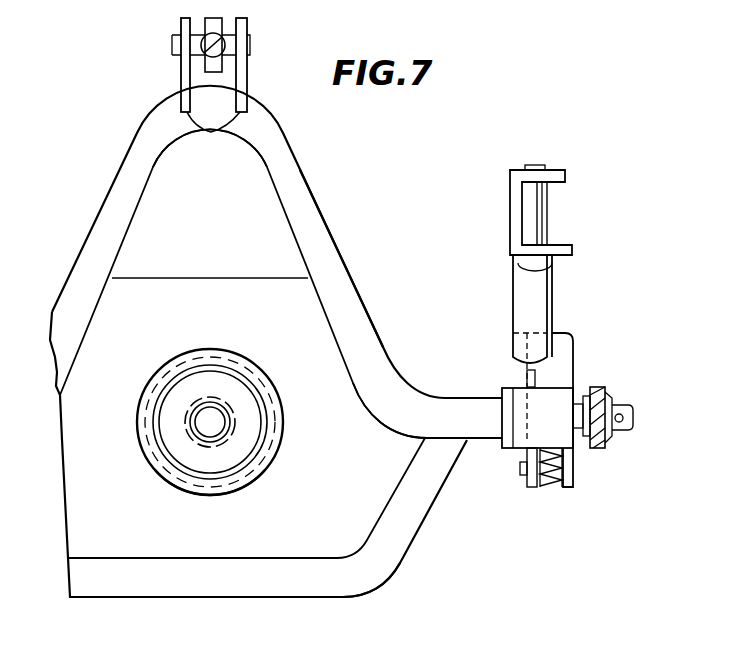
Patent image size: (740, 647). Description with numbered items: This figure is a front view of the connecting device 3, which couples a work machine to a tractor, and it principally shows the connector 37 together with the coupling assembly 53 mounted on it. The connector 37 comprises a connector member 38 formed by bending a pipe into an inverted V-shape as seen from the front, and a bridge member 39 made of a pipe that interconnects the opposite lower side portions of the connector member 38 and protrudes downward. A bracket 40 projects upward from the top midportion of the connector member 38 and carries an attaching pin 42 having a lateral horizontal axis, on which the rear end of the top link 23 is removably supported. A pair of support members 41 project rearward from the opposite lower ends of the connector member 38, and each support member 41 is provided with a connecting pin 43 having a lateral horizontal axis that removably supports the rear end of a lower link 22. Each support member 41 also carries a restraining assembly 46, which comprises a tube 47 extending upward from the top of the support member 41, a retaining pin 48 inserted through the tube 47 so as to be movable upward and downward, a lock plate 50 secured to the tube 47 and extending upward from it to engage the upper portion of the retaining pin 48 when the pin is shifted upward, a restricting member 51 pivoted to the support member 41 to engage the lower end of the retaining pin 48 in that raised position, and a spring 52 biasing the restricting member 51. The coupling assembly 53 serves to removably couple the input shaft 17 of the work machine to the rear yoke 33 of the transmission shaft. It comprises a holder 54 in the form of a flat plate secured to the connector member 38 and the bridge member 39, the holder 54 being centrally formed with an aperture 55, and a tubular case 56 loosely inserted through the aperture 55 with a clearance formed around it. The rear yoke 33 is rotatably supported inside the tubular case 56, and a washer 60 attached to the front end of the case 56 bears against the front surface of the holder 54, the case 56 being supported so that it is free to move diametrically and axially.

The connecting device 3 is at (80, 224).
The input shaft 17 is at (218, 428).
The lower link 22 is at (599, 401).
The top link 23 is at (220, 42).
The rear yoke 33 is at (214, 400).
The connector 37 is at (360, 278).
The connector member 38 is at (376, 385).
The bridge member 39 is at (393, 555).
The bracket 40 is at (211, 132).
The support member 41 is at (540, 408).
The attaching pin 42 is at (252, 45).
The connecting pin 43 is at (618, 432).
The restraining assembly 46 is at (577, 285).
The tube 47 is at (535, 325).
The retaining pin 48 is at (541, 251).
The lock plate 50 is at (540, 205).
The restricting member 51 is at (530, 473).
The spring 52 is at (553, 478).
The coupling assembly 53 is at (183, 499).
The holder 54 is at (194, 283).
The aperture 55 is at (266, 408).
The tubular case 56 is at (244, 462).
The washer 60 is at (216, 496).